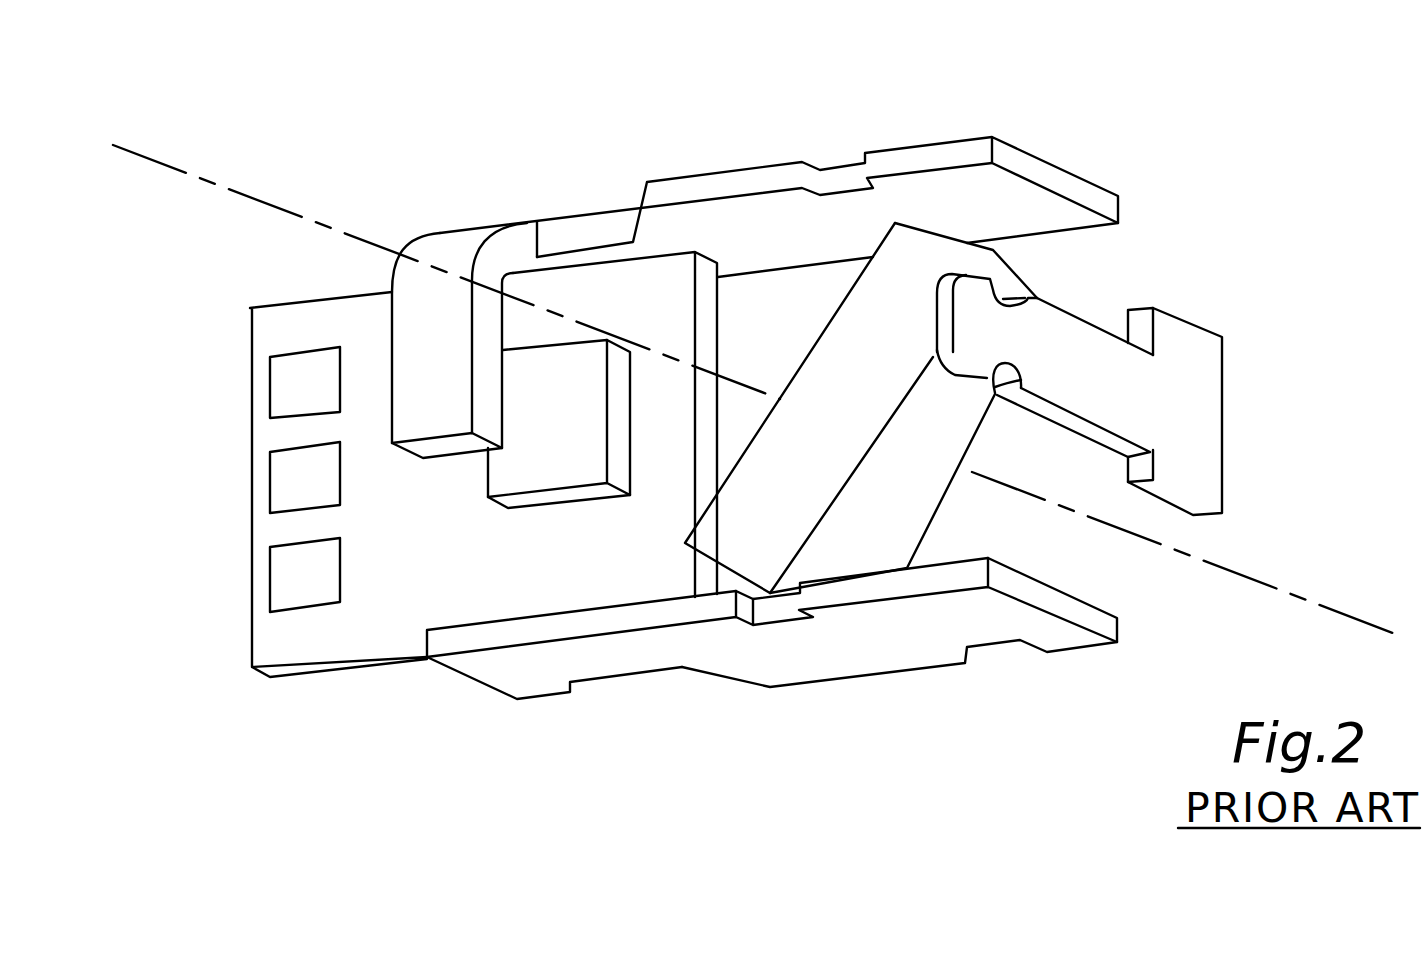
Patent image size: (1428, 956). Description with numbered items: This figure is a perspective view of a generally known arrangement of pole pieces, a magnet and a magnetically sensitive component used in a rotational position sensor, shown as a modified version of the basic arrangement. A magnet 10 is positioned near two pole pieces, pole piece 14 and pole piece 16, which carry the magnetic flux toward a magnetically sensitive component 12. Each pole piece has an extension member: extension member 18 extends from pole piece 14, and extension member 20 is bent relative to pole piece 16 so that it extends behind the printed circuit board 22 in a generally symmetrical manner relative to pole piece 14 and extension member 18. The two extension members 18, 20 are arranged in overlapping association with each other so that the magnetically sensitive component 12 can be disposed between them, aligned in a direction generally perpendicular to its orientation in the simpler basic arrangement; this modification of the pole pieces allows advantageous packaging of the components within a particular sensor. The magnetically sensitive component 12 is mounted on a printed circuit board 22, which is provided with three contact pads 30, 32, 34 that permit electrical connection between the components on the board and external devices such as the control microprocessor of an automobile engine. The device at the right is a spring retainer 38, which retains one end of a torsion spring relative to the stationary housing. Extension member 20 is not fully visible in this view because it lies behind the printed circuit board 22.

The magnet 10 is at (920, 512).
The magnetically sensitive component 12 is at (540, 473).
The pole piece 14 is at (743, 207).
The pole piece 16 is at (835, 660).
The extension member 18 is at (423, 335).
The extension member 20 is at (572, 683).
The printed circuit board 22 is at (335, 643).
The contact pad 30 is at (292, 397).
The contact pad 32 is at (285, 482).
The contact pad 34 is at (292, 573).
The spring retainer 38 is at (1185, 387).